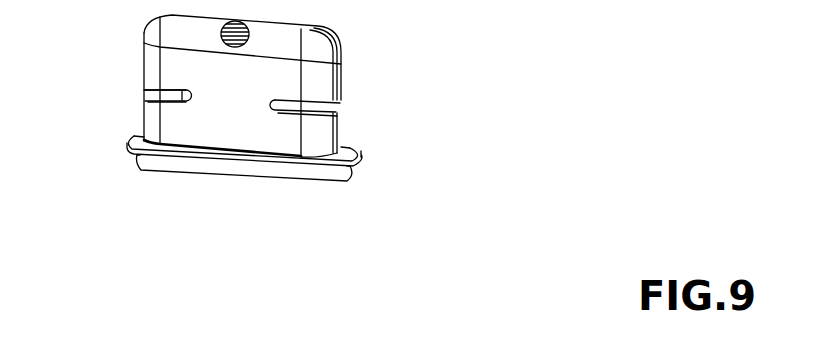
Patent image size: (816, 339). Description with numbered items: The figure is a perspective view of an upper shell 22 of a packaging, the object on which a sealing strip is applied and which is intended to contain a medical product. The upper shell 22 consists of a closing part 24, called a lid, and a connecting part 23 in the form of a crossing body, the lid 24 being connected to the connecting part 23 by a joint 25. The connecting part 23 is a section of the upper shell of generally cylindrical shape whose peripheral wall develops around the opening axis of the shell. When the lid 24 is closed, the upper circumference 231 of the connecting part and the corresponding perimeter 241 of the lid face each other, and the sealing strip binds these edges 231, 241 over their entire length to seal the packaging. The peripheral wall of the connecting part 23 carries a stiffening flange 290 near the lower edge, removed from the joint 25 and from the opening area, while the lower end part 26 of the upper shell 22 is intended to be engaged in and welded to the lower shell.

The upper shell 22 is at (284, 124).
The connecting part 23 is at (327, 132).
The closing part 24 is at (313, 80).
The joint 25 is at (222, 98).
The lower end part 26 is at (211, 167).
The upper circumference of the connecting part 231 is at (157, 97).
The perimeter of the lid 241 is at (148, 88).
The flange 290 is at (138, 152).